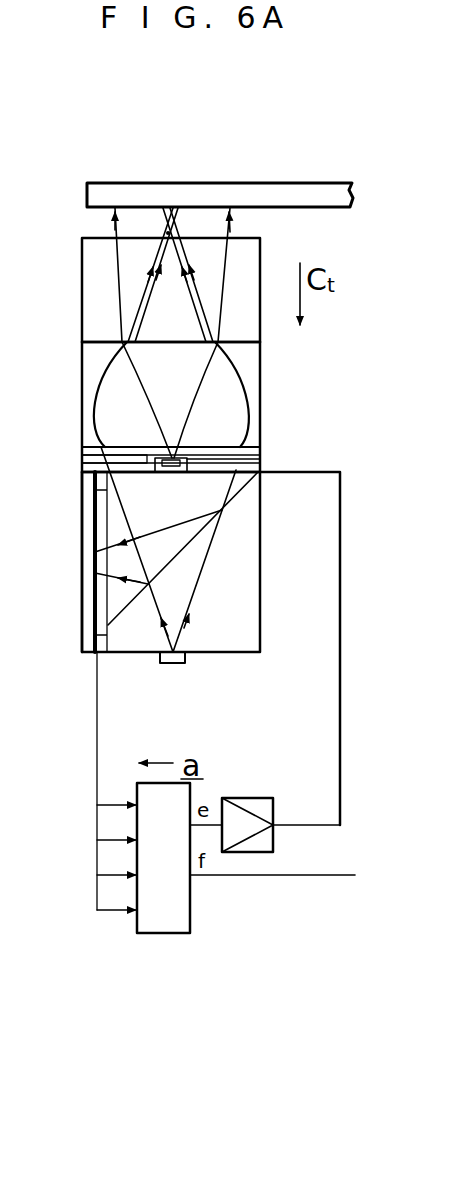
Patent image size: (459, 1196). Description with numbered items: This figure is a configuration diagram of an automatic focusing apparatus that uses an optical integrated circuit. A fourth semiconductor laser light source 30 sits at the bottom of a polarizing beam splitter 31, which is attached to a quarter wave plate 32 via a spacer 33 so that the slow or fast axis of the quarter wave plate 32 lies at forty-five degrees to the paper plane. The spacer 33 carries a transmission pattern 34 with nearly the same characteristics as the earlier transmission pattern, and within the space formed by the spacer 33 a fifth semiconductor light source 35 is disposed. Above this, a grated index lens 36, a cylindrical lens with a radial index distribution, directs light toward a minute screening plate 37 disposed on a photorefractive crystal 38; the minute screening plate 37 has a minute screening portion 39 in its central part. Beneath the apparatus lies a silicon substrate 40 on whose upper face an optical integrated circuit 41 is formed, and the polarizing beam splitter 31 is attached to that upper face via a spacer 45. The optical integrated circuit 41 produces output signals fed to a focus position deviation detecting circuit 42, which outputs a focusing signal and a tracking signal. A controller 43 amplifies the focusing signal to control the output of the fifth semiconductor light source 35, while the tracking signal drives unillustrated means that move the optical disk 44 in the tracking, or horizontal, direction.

The fourth semiconductor laser light source 30 is at (187, 660).
The polarizing beam splitter 31 is at (261, 640).
The quarter wave plate 32 is at (261, 452).
The spacer 33 is at (262, 468).
The transmission pattern 34 is at (82, 460).
The fifth semiconductor light source 35 is at (170, 468).
The grated index lens 36 is at (261, 372).
The minute screening plate 37 is at (165, 232).
The photorefractive crystal 38 is at (261, 318).
The minute screening portion 39 is at (182, 205).
The silicon substrate 40 is at (82, 648).
The optical integrated circuit 41 is at (95, 655).
The focus position deviation detecting circuit 42 is at (173, 933).
The controller 43 is at (262, 852).
The optical disk 44 is at (114, 183).
The spacer 45 is at (107, 655).